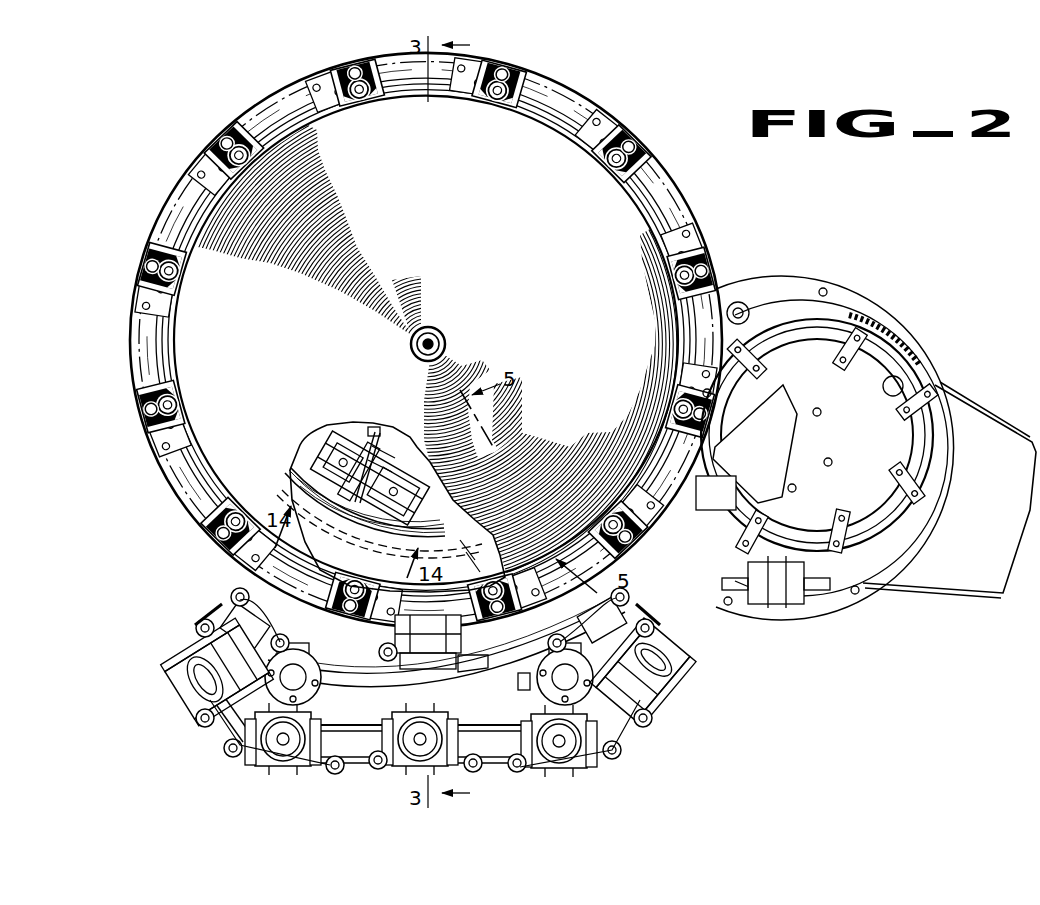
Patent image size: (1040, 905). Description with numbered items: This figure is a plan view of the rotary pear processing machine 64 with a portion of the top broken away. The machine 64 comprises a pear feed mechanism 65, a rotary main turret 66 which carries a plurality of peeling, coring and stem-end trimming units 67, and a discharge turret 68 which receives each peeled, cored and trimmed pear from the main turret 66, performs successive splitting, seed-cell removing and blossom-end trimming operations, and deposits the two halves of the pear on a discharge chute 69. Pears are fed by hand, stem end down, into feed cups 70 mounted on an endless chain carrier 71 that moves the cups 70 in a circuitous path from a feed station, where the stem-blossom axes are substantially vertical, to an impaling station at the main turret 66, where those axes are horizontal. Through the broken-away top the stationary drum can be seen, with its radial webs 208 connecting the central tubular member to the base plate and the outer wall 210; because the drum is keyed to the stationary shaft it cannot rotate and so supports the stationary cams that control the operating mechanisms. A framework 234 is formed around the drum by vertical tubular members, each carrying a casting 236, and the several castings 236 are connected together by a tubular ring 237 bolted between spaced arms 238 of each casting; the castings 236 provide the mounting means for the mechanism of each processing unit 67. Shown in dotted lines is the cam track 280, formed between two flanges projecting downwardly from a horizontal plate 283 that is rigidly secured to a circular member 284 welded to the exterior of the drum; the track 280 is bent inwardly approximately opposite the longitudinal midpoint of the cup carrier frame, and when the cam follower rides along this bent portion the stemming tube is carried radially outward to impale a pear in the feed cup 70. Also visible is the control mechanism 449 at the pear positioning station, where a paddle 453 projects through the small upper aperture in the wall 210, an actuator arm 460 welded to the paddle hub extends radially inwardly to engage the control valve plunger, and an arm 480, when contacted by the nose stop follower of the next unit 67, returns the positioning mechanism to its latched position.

The rotary pear processing machine 64 is at (742, 192).
The pear feed mechanism 65 is at (704, 683).
The rotary main turret 66 is at (184, 177).
The peeling, coring and stem-end trimming unit 67 is at (663, 107).
The discharge turret 68 is at (921, 302).
The discharge chute 69 is at (990, 412).
The feed cup 70 is at (185, 664).
The endless chain carrier 71 is at (222, 737).
The radial web 208 is at (434, 497).
The outer wall 210 is at (320, 432).
The framework 234 is at (185, 507).
The casting 236 is at (321, 79).
The tubular ring 237 is at (660, 186).
The arm 238 is at (307, 86).
The cam track 280 is at (473, 524).
The horizontal plate 283 is at (480, 550).
The circular member 284 is at (453, 507).
The control mechanism 449 is at (379, 423).
The paddle 453 is at (362, 520).
The actuator arm 460 is at (373, 450).
The arm 480 is at (386, 531).